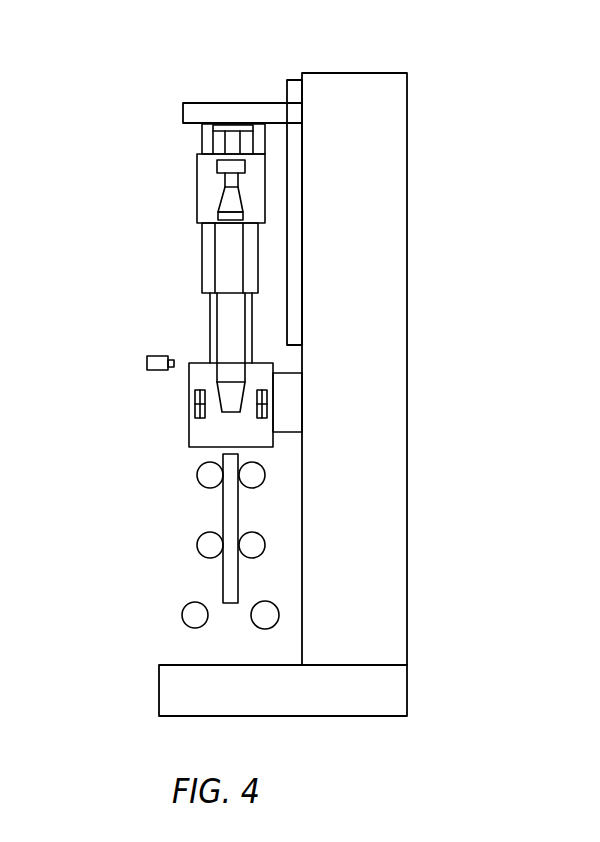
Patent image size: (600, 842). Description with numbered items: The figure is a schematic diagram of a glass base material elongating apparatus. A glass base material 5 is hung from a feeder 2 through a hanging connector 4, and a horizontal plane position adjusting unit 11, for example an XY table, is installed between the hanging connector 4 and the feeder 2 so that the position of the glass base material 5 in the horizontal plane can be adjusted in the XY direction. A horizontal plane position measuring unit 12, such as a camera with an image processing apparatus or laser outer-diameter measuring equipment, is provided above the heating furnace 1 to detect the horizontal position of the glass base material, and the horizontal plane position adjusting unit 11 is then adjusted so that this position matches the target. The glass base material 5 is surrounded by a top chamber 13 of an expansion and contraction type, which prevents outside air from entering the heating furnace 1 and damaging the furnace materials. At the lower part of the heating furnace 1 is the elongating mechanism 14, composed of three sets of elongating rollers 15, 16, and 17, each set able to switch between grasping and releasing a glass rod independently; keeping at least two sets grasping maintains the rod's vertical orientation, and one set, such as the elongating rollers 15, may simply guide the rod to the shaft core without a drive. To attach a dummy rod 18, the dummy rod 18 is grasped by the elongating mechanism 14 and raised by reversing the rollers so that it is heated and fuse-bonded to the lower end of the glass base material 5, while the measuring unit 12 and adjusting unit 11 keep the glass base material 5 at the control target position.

The heating furnace 1 is at (189, 413).
The feeder 2 is at (188, 112).
The hanging connector 4 is at (218, 169).
The glass base material 5 is at (223, 265).
The horizontal plane position adjusting unit 11 is at (202, 138).
The horizontal plane position measuring unit 12 is at (147, 363).
The top chamber 13 is at (210, 313).
The elongating mechanism 14 is at (87, 494).
The elongating rollers 15 is at (200, 478).
The elongating rollers 16 is at (200, 549).
The elongating rollers 17 is at (190, 614).
The dummy rod 18 is at (232, 512).